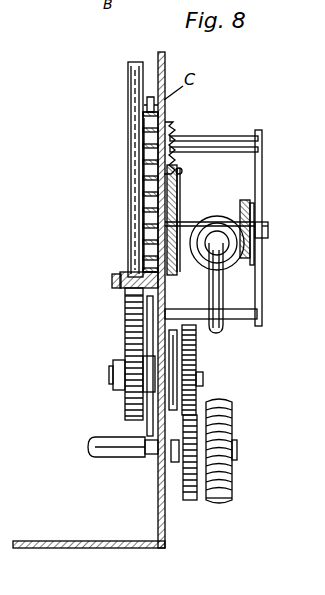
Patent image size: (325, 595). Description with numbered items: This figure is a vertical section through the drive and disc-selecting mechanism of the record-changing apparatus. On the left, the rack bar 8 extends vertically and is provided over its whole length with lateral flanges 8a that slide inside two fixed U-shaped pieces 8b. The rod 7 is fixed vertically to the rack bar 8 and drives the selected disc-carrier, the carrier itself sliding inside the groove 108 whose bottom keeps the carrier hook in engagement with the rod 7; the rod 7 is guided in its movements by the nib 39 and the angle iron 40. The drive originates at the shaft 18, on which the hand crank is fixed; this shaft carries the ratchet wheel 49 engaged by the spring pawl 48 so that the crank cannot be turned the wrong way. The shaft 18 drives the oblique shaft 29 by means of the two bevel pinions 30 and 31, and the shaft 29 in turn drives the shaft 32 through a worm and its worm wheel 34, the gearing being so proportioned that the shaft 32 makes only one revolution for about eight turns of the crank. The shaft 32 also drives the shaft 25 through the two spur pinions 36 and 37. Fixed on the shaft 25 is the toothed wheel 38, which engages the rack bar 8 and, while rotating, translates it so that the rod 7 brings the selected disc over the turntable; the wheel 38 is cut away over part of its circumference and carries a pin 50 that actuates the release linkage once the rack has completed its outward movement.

The nib 39 is at (150, 96).
The angle iron 40 is at (145, 106).
The groove 108 is at (150, 155).
The rod 7 is at (141, 208).
The rack bar 8 is at (125, 292).
The lateral flange 8a is at (125, 273).
The U-shaped piece 8b is at (113, 276).
The toothed wheel 38 is at (134, 334).
The pin 50 is at (116, 437).
The spring pawl 48 is at (180, 182).
The ratchet wheel 49 is at (181, 210).
The bevel pinion 30 is at (249, 214).
The shaft 18 is at (268, 230).
The bevel pinion 31 is at (235, 262).
The oblique shaft 29 is at (218, 326).
The spur pinion 37 is at (190, 325).
The shaft 25 is at (203, 381).
The shaft 32 is at (235, 452).
The worm wheel 34 is at (215, 490).
The spur pinion 36 is at (190, 495).